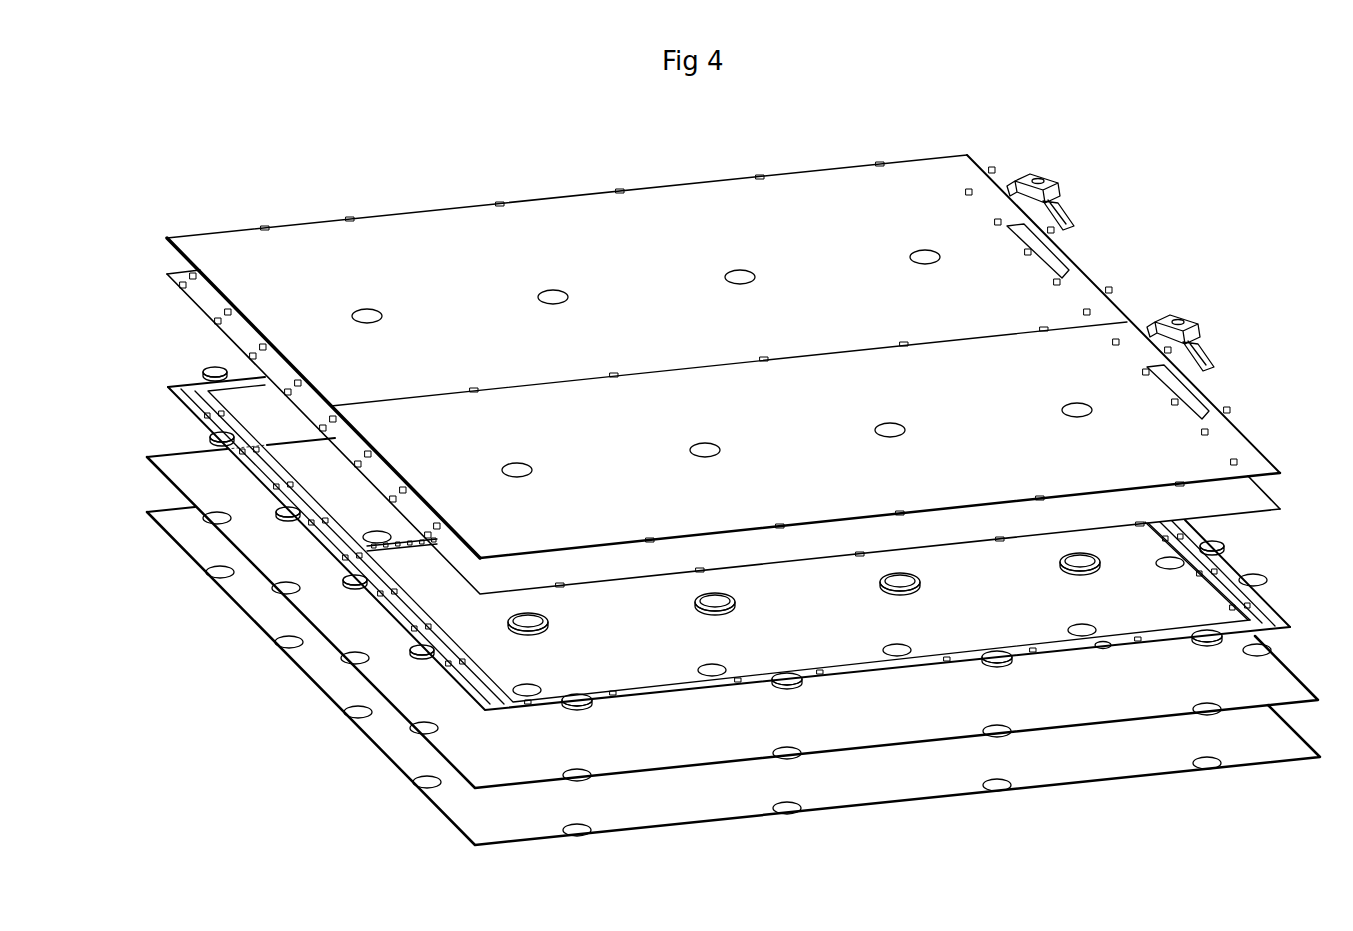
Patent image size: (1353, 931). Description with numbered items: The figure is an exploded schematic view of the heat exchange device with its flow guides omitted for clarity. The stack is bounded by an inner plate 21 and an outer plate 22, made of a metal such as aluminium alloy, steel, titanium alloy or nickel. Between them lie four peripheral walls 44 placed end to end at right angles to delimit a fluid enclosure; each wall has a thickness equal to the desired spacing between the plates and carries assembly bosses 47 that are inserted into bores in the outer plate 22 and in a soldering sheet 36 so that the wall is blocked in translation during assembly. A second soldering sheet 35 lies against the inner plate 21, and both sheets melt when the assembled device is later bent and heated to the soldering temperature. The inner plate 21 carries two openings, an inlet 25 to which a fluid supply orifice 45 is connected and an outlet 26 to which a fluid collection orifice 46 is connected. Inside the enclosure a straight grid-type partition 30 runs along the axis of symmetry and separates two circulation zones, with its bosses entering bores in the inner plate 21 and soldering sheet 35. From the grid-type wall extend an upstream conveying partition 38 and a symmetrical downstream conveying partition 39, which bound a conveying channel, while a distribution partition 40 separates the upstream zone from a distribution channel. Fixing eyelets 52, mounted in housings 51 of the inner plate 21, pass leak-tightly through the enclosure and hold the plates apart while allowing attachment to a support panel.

The inner plate 21 is at (457, 225).
The outer plate 22 is at (733, 664).
The inlet 25 is at (1210, 408).
The outlet 26 is at (1065, 258).
The grid-type partition 30 is at (397, 547).
The soldering sheet 35 is at (187, 282).
The soldering sheet 36 is at (412, 698).
The upstream conveying partition 38 is at (490, 688).
The downstream conveying partition 39 is at (240, 447).
The distribution partition 40 is at (1283, 607).
The peripheral wall 44 is at (228, 380).
The fluid supply orifice 45 is at (1197, 327).
The fluid collection orifice 46 is at (1060, 185).
The assembly boss 47 is at (998, 663).
The housing 51 is at (553, 297).
The fixing eyelet 52 is at (530, 630).